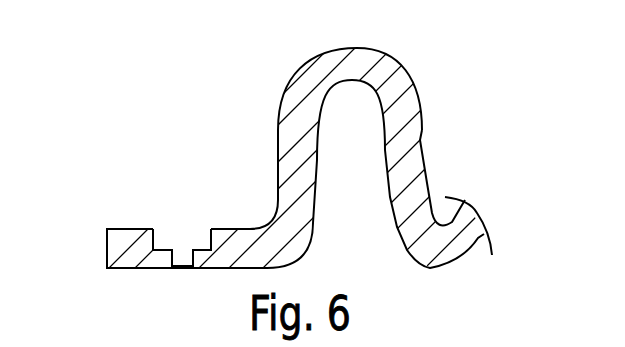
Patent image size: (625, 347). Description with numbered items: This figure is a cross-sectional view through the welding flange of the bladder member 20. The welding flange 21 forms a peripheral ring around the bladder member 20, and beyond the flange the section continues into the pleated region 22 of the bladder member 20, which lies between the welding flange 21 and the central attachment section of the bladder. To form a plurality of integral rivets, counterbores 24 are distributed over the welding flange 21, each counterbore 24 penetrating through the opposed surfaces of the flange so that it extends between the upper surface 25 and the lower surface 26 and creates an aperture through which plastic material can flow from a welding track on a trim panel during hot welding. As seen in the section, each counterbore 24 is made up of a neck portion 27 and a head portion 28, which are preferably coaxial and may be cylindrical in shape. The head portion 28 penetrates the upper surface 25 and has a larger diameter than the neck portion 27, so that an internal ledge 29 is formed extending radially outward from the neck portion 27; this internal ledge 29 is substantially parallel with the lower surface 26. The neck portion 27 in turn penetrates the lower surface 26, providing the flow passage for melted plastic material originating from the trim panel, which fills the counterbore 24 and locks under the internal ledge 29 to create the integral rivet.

The bladder member 20 is at (290, 78).
The welding flange 21 is at (118, 249).
The pleated region 22 is at (410, 77).
The counterbore 24 is at (182, 219).
The upper surface 25 is at (247, 228).
The lower surface 26 is at (213, 270).
The neck portion 27 is at (188, 258).
The head portion 28 is at (160, 230).
The internal ledge 29 is at (203, 244).